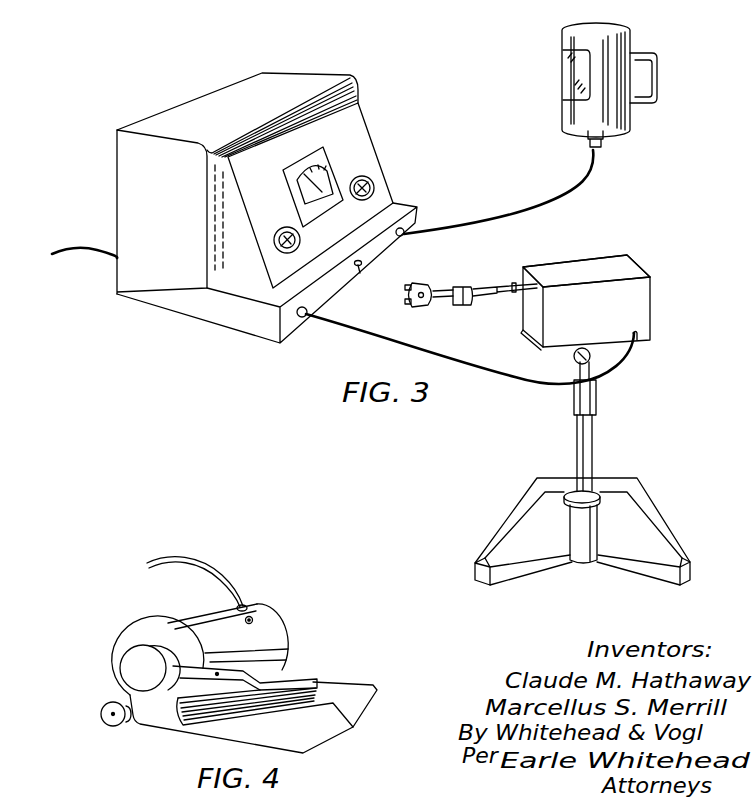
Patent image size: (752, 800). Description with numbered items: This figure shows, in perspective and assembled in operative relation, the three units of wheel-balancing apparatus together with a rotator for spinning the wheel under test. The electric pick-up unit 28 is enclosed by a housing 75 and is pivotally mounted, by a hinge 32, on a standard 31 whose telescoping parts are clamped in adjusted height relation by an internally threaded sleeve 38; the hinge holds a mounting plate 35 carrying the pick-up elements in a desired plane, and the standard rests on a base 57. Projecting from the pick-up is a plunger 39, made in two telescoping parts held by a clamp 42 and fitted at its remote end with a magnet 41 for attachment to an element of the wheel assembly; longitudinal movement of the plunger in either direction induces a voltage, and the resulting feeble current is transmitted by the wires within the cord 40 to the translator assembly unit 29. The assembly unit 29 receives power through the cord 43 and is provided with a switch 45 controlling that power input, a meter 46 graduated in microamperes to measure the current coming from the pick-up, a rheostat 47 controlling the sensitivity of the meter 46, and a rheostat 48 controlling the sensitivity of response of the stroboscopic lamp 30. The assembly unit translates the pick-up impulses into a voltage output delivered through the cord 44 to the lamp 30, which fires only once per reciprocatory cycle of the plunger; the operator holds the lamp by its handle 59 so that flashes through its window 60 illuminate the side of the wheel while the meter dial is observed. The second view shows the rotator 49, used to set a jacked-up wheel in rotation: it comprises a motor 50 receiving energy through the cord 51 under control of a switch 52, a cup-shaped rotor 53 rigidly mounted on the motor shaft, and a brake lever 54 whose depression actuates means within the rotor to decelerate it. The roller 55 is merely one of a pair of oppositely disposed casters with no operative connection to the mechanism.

In FIG. 3, the electric pick-up unit 28 is at (578, 320).
In FIG. 3, the translator assembly unit 29 is at (137, 207).
In FIG. 3, the stroboscopic lamp 30 is at (632, 32).
In FIG. 3, the standard 31 is at (594, 460).
In FIG. 3, the hinge 32 is at (574, 361).
In FIG. 3, the mounting plate 35 is at (652, 337).
In FIG. 3, the sleeve 38 is at (597, 398).
In FIG. 3, the plunger 39 is at (498, 287).
In FIG. 3, the cord 40 is at (532, 378).
In FIG. 3, the magnet 41 is at (418, 282).
In FIG. 3, the clamp 42 is at (466, 286).
In FIG. 3, the cord 43 is at (92, 258).
In FIG. 3, the cord 44 is at (591, 169).
In FIG. 3, the switch 45 is at (360, 269).
In FIG. 3, the meter 46 is at (326, 172).
In FIG. 3, the rheostat 47 is at (285, 228).
In FIG. 3, the rheostat 48 is at (373, 186).
In FIG. 4, the rotator 49 is at (139, 722).
In FIG. 4, the motor 50 is at (200, 649).
In FIG. 4, the cord 51 is at (204, 569).
In FIG. 4, the switch 52 is at (252, 617).
In FIG. 4, the cup-shaped rotor 53 is at (130, 667).
In FIG. 4, the brake lever 54 is at (305, 677).
In FIG. 4, the roller 55 is at (101, 715).
In FIG. 3, the tripod base 57 is at (650, 513).
In FIG. 3, the handle 59 is at (653, 85).
In FIG. 3, the window 60 is at (567, 80).
In FIG. 3, the housing 75 is at (630, 270).